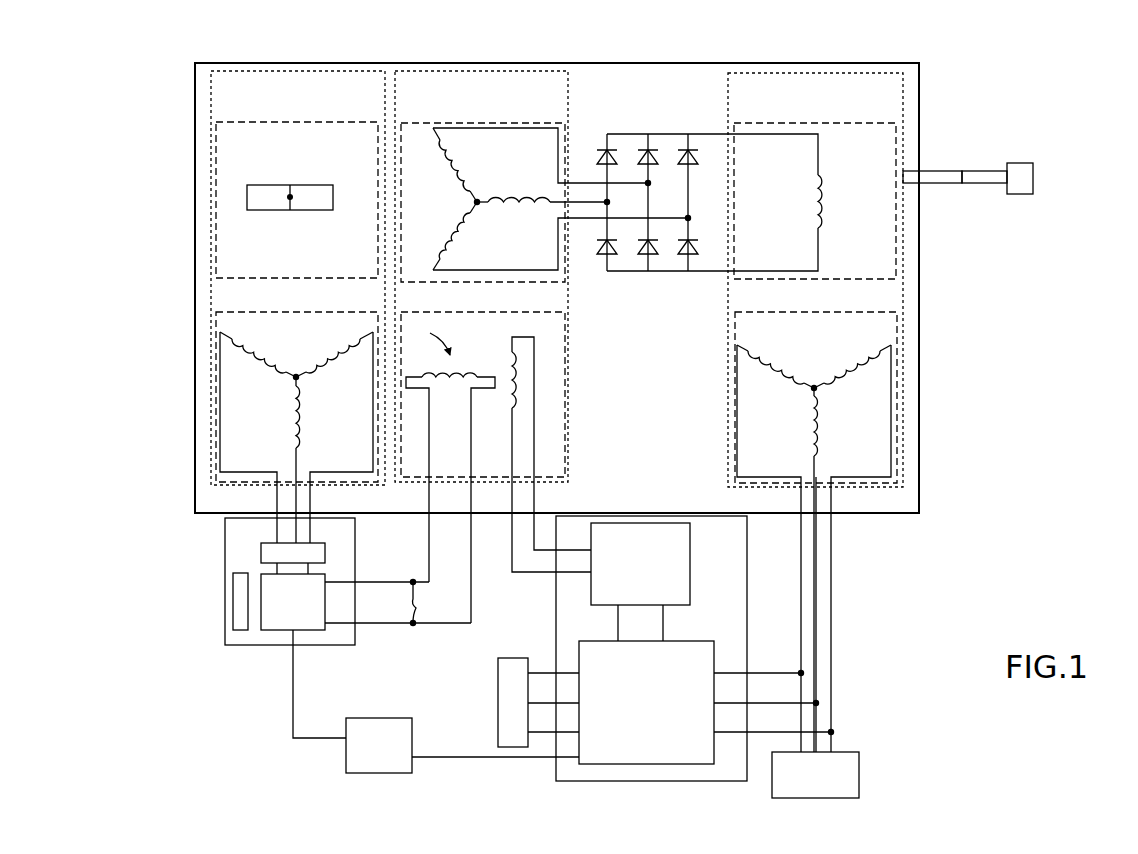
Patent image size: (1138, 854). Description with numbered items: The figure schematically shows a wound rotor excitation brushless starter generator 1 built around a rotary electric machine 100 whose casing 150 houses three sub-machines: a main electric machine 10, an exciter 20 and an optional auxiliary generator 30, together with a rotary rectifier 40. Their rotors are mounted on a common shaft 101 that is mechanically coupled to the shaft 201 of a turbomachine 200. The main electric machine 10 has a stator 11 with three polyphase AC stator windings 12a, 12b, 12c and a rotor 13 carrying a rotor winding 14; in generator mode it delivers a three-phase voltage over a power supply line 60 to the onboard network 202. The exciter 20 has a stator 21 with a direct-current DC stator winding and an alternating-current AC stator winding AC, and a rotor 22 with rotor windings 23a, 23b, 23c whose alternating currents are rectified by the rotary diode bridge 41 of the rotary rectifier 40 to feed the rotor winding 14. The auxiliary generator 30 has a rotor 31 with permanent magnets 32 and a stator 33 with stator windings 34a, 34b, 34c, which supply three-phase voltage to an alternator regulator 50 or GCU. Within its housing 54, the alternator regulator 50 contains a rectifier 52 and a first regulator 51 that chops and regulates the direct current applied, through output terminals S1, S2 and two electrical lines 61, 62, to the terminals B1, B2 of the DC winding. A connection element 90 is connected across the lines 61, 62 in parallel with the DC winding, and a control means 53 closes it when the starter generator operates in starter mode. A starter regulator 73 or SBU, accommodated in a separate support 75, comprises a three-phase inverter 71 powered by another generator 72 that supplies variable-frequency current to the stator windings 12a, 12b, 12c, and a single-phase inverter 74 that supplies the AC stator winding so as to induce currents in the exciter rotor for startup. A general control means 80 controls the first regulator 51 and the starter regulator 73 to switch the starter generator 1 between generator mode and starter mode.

The starter generator 1 is at (216, 736).
The main electric machine 10 is at (728, 100).
The stator 11 is at (735, 328).
The stator winding 12a is at (788, 357).
The stator winding 12b is at (836, 357).
The stator winding 12c is at (828, 440).
The rotor 13 is at (896, 245).
The rotor winding 14 is at (828, 206).
The exciter 20 is at (568, 318).
The stator 21 is at (568, 372).
The rotor 22 is at (568, 150).
The rotor winding 23a is at (447, 162).
The rotor winding 23b is at (519, 207).
The rotor winding 23c is at (447, 222).
The auxiliary generator 30 is at (216, 122).
The rotor 31 is at (213, 165).
The permanent magnets 32 is at (290, 197).
The stator 33 is at (216, 320).
The stator winding 34a is at (252, 360).
The stator winding 34b is at (325, 356).
The stator winding 34c is at (290, 426).
The rotary rectifier 40 is at (650, 108).
The rotary diode bridge 41 is at (688, 165).
The alternator regulator 50 is at (260, 628).
The first regulator 51 is at (285, 632).
The rectifier 52 is at (261, 550).
The control means 53 is at (233, 606).
The housing 54 is at (225, 573).
The power supply line 60 is at (845, 575).
The first line 61 is at (429, 520).
The second line 62 is at (471, 565).
The three-phase inverter 71 is at (696, 641).
The other generator 72 is at (498, 690).
The starter regulator 73 is at (522, 778).
The single-phase inverter 74 is at (690, 578).
The support 75 is at (556, 612).
The general control means 80 is at (380, 718).
The connection element 90 is at (424, 604).
The rotary electric machine 100 is at (172, 247).
The common shaft 101 is at (935, 183).
The casing 150 is at (195, 100).
The turbomachine 200 is at (1026, 194).
The shaft 201 is at (990, 171).
The onboard network 202 is at (859, 770).
The output terminal S1 is at (413, 582).
The output terminal S2 is at (413, 623).
The terminal B1 is at (427, 392).
The terminal B2 is at (478, 393).
The alternating-current stator winding AC is at (500, 362).